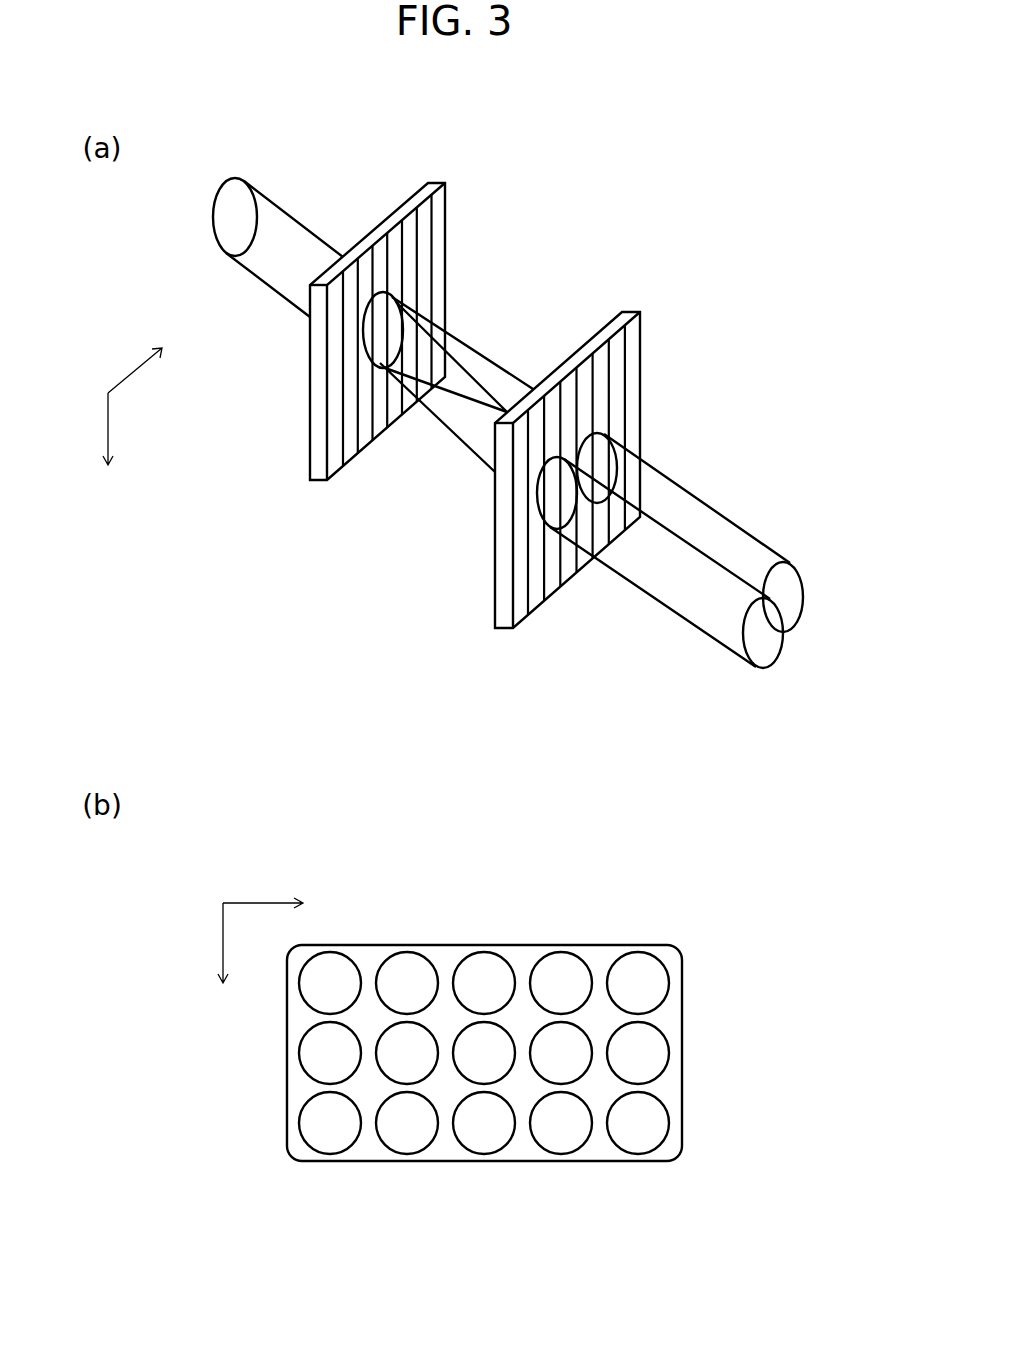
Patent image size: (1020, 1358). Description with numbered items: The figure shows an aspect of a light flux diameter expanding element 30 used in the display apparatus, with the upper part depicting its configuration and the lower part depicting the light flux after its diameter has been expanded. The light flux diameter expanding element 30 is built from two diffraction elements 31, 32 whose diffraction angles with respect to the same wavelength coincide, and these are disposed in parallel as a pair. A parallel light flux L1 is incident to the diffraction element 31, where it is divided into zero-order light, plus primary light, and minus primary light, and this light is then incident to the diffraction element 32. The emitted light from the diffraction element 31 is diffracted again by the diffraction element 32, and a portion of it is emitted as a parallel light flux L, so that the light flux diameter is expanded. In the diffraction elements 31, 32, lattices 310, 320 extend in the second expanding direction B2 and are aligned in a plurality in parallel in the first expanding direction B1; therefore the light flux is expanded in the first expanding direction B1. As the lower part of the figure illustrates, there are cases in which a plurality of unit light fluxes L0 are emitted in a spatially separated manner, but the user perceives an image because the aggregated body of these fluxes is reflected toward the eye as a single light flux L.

The light flux diameter expanding element 30 is at (570, 186).
The diffraction element 31 is at (440, 182).
The lattices 310 is at (432, 232).
The diffraction element 32 is at (630, 312).
The lattices 320 is at (608, 382).
The parallel light flux L1 is at (367, 325).
The parallel light flux L is at (738, 1023).
The unit light fluxes L0 is at (508, 1140).
The first expanding direction B1 is at (247, 628).
The second expanding direction B2 is at (165, 712).